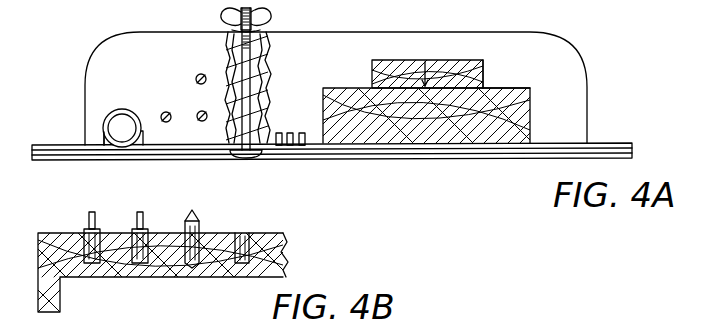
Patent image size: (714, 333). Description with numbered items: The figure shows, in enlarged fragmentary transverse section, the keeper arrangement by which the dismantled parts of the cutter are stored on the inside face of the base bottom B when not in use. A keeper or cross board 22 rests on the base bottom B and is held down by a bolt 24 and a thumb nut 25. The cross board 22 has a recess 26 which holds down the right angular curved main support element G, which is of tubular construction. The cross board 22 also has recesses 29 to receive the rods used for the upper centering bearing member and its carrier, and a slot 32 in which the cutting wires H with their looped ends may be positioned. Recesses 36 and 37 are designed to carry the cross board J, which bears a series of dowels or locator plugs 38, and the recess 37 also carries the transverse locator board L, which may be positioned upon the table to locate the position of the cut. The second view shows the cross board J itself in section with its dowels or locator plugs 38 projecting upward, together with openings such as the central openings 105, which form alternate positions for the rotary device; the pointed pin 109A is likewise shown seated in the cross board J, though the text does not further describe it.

In FIG. 4A, the base bottom B is at (634, 147).
In FIG. 4A, the keeper board 22 is at (558, 58).
In FIG. 4A, the bolt 24 is at (228, 13).
In FIG. 4A, the thumb nut 25 is at (272, 16).
In FIG. 4A, the recess 26 is at (120, 110).
In FIG. 4A, the recesses 29 is at (197, 84).
In FIG. 4A, the main support element G is at (103, 126).
In FIG. 4A, the recess 36 is at (372, 64).
In FIG. 4A, the recess 37 is at (323, 102).
In FIG. 4A, the transverse locator board L is at (498, 90).
In FIG. 4A, the cross board J is at (484, 59).
In FIG. 4B, the cross board J is at (219, 270).
In FIG. 4A, the slot 32 is at (302, 132).
In FIG. 4A, the cutting wires H is at (279, 147).
In FIG. 4B, the dowels or locator plugs 38 is at (140, 211).
In FIG. 4B, the pointed pin 109A is at (200, 223).
In FIG. 4B, the central openings 105 is at (248, 233).